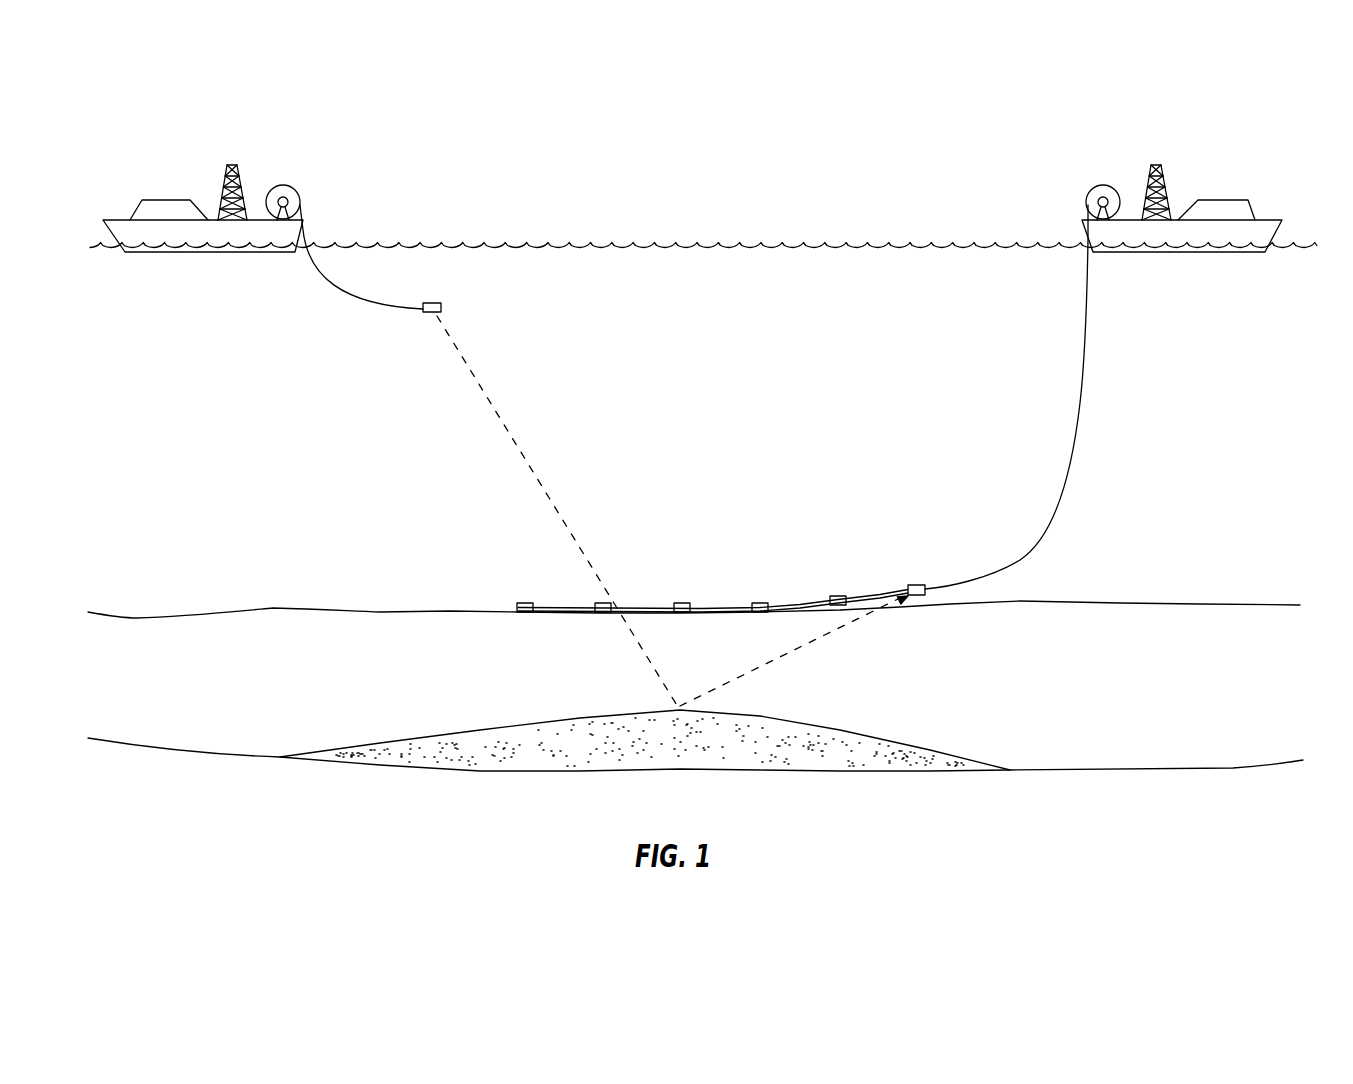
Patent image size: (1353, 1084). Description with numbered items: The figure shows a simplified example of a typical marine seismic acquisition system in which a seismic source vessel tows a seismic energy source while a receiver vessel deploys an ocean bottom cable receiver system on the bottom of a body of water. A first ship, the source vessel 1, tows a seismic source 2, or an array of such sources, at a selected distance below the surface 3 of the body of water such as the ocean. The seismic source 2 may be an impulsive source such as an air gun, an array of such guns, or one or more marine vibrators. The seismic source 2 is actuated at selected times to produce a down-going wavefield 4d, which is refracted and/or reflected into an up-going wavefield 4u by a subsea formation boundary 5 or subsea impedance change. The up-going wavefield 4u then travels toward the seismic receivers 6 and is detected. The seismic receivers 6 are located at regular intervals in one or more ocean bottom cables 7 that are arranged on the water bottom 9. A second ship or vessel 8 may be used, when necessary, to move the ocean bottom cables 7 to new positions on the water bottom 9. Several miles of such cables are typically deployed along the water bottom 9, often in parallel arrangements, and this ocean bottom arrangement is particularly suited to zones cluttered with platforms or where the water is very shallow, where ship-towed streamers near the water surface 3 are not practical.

The source vessel 1 is at (160, 198).
The seismic source 2 is at (436, 303).
The surface 3 is at (670, 247).
The down-going wavefield 4d is at (495, 417).
The up-going wavefield 4u is at (818, 642).
The subsea formation boundary 5 is at (922, 746).
The seismic receivers 6 is at (917, 586).
The ocean bottom cable 7 is at (1078, 405).
The second vessel 8 is at (1222, 198).
The water bottom 9 is at (310, 608).